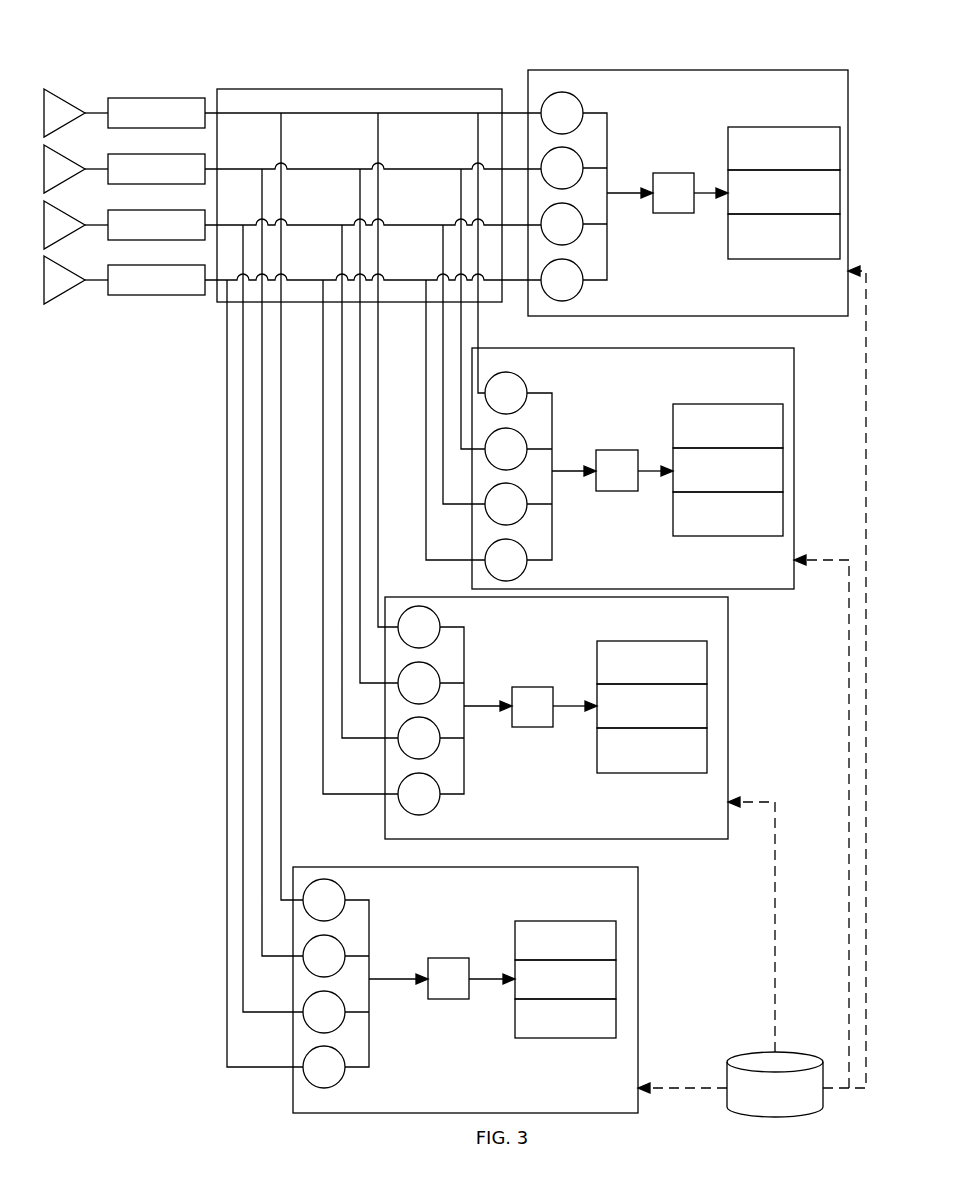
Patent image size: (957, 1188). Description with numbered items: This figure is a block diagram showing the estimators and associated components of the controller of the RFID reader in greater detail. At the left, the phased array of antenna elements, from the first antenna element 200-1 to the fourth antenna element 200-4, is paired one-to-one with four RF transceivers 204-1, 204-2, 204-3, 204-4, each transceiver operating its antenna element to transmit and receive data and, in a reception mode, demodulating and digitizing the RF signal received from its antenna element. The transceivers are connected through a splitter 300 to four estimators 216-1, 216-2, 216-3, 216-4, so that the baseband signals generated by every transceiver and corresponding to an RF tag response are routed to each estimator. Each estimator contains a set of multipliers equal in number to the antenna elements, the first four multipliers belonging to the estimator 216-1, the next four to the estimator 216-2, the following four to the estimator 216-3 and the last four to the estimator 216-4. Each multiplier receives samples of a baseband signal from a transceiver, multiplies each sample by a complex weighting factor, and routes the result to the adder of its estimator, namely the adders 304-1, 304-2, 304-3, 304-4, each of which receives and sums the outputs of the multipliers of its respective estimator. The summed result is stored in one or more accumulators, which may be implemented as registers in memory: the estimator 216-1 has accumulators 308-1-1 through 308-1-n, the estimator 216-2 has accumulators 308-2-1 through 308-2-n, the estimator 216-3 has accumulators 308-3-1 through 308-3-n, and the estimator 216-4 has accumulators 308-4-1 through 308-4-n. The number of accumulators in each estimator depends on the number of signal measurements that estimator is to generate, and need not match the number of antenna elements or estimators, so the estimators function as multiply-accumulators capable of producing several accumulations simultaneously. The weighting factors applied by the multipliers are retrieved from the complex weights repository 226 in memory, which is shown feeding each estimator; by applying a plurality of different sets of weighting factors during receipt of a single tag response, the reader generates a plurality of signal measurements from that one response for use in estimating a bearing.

The antenna element 200-1 is at (44, 89).
The antenna element 200-4 is at (44, 305).
The RF transceiver 204-1 is at (156, 113).
The RF transceiver 204-2 is at (156, 169).
The RF transceiver 204-3 is at (156, 225).
The RF transceiver 204-4 is at (156, 280).
The splitter 300 is at (358, 88).
The estimator 216-1 is at (688, 193).
The estimator 216-2 is at (633, 468).
The estimator 216-3 is at (556, 718).
The estimator 216-4 is at (465, 990).
The adder 304-1 is at (674, 172).
The adder 304-2 is at (618, 448).
The adder 304-3 is at (533, 685).
The adder 304-4 is at (448, 957).
The accumulator 308-1-1 is at (784, 148).
The accumulator 308-1-n is at (784, 236).
The accumulator 308-2-1 is at (728, 426).
The accumulator 308-2-n is at (728, 514).
The accumulator 308-3-1 is at (652, 662).
The accumulator 308-3-n is at (652, 750).
The accumulator 308-4-1 is at (565, 940).
The accumulator 308-4-n is at (565, 1018).
The complex weights repository 226 is at (738, 1053).